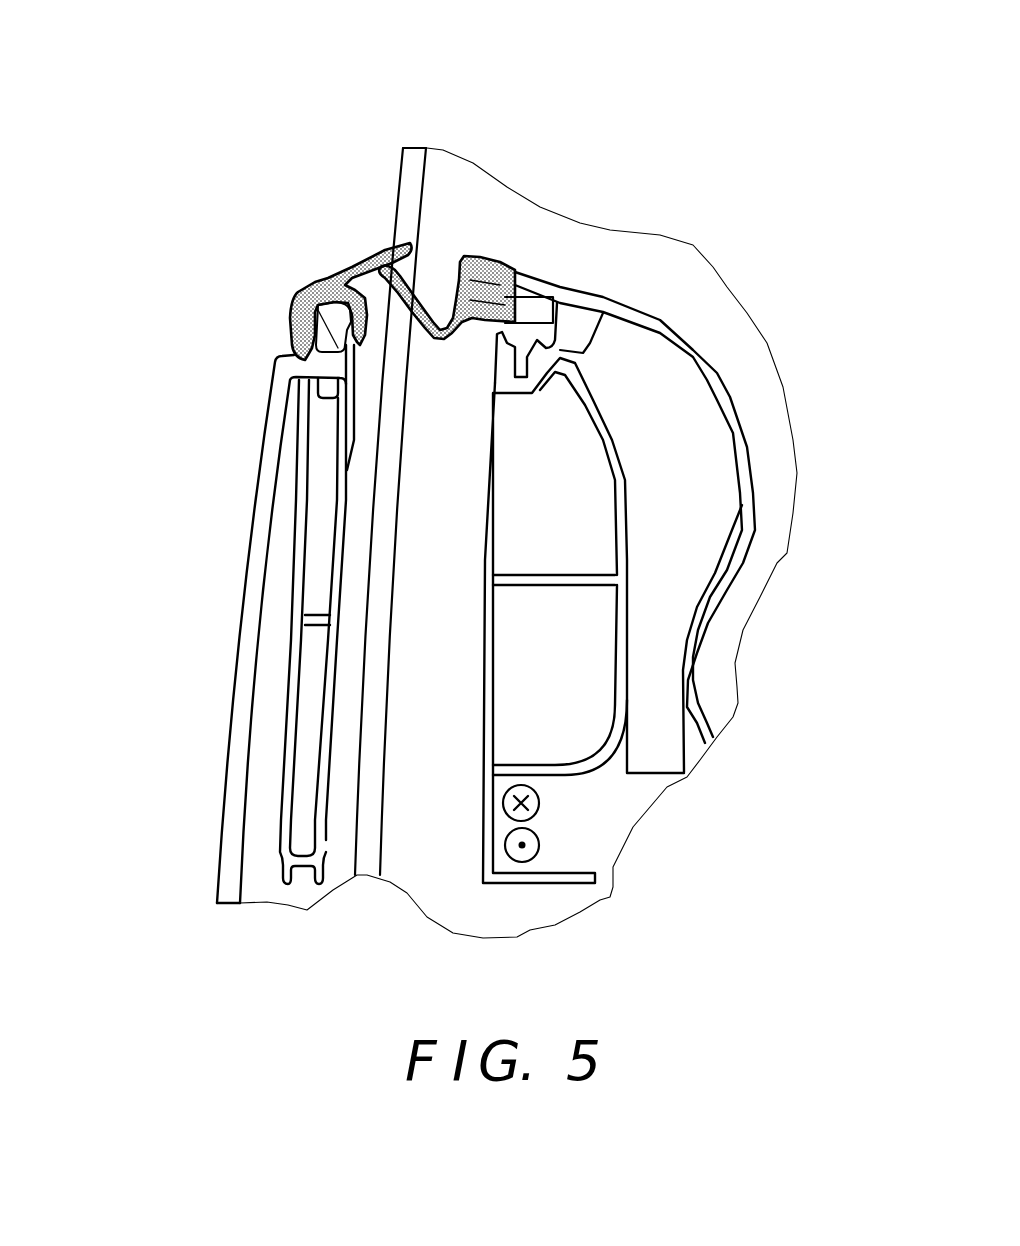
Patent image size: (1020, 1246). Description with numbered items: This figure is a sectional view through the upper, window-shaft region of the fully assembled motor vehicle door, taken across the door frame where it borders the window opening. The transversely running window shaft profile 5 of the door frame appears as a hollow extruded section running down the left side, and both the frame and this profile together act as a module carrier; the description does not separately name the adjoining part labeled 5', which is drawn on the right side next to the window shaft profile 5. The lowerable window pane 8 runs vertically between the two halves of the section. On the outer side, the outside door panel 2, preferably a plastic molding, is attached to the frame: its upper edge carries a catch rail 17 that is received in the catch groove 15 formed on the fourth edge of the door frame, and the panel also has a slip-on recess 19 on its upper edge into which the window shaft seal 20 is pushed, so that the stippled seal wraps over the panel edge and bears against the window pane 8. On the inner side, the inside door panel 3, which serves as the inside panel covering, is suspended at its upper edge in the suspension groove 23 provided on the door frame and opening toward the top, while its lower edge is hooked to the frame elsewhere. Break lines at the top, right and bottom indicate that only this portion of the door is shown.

The outside door panel 2 is at (260, 551).
The inside door panel 3 is at (603, 307).
The window shaft profile 5 is at (213, 614).
The inner frame member 5' is at (694, 620).
The lowerable window pane 8 is at (412, 182).
The catch groove 15 is at (323, 381).
The catch rail 17 is at (337, 385).
The slip-on recess 19 is at (296, 297).
The window shaft seal 20 is at (328, 275).
The suspension groove 23 is at (532, 362).